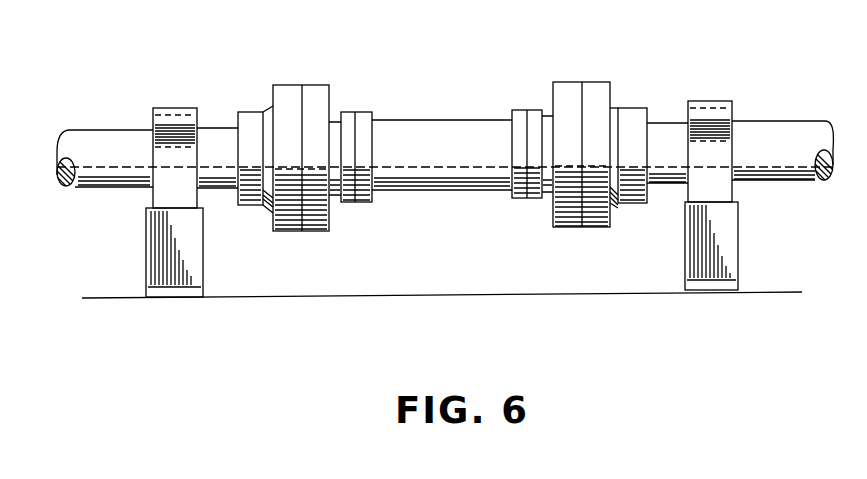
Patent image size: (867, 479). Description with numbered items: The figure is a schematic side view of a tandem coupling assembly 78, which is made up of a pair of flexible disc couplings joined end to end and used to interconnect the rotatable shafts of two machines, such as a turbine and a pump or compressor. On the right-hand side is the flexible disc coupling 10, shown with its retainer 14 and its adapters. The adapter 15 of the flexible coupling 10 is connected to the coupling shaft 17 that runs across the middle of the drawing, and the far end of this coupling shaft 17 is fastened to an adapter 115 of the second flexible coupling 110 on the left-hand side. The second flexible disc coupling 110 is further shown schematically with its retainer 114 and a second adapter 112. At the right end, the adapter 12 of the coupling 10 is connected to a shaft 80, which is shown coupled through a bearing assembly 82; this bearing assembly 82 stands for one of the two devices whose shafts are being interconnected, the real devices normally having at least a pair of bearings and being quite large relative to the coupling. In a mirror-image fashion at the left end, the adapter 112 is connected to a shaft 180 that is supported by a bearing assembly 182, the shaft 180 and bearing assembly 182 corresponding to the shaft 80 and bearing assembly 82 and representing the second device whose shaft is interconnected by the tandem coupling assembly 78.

The tandem coupling assembly 78 is at (452, 257).
The bearing assembly 182 is at (160, 106).
The shaft 180 is at (219, 127).
The second adapter 112 is at (268, 110).
The retainer 114 is at (312, 84).
The second flexible coupling 110 is at (304, 154).
The adapter 115 is at (345, 111).
The coupling shaft 17 is at (412, 119).
The adapter 15 is at (546, 115).
The retainer 14 is at (572, 81).
The flexible disc coupling 10 is at (592, 149).
The adapter 12 is at (614, 106).
The shaft 80 is at (667, 122).
The bearing assembly 82 is at (728, 96).